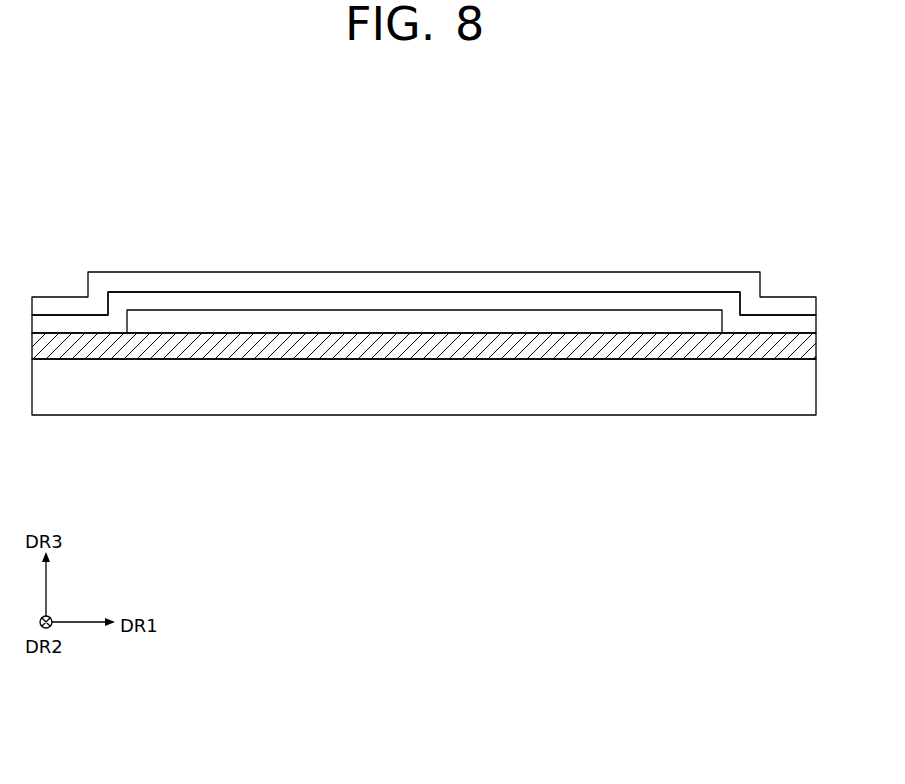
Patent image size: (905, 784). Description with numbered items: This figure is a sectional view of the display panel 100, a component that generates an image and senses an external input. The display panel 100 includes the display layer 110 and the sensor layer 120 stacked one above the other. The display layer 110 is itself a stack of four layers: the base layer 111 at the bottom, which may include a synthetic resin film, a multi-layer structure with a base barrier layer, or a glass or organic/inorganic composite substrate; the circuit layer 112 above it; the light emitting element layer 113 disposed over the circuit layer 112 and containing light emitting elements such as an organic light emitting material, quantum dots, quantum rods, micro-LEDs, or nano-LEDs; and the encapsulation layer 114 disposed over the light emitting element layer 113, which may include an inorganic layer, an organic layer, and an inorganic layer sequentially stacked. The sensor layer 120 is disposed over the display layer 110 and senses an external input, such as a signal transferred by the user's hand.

The display panel 100 is at (756, 213).
The display layer 110 is at (643, 485).
The base layer 111 is at (422, 402).
The circuit layer 112 is at (488, 348).
The light emitting element layer 113 is at (552, 323).
The encapsulation layer 114 is at (618, 302).
The sensor layer 120 is at (510, 273).